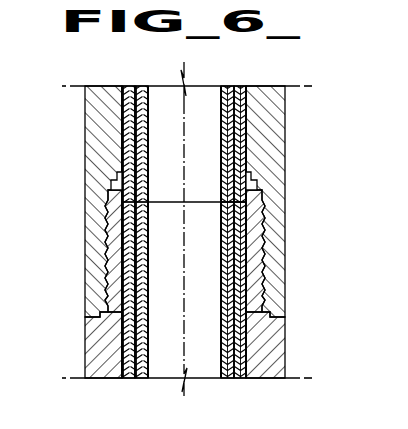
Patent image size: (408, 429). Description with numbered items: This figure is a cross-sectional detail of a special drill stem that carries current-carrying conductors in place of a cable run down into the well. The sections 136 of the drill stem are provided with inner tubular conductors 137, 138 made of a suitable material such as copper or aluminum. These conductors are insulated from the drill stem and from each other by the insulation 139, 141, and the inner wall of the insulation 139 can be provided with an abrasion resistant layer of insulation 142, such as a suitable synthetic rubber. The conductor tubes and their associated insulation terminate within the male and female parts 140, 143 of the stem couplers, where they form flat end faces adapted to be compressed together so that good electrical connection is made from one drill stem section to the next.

The drill stem section 136 is at (276, 156).
The inner tubular conductor 137 is at (240, 142).
The inner tubular conductor 138 is at (227, 128).
The insulation 139 is at (236, 297).
The male part of stem coupler 140 is at (262, 250).
The insulation 141 is at (243, 222).
The abrasion resistant layer of insulation 142 is at (226, 273).
The female part of stem coupler 143 is at (275, 273).